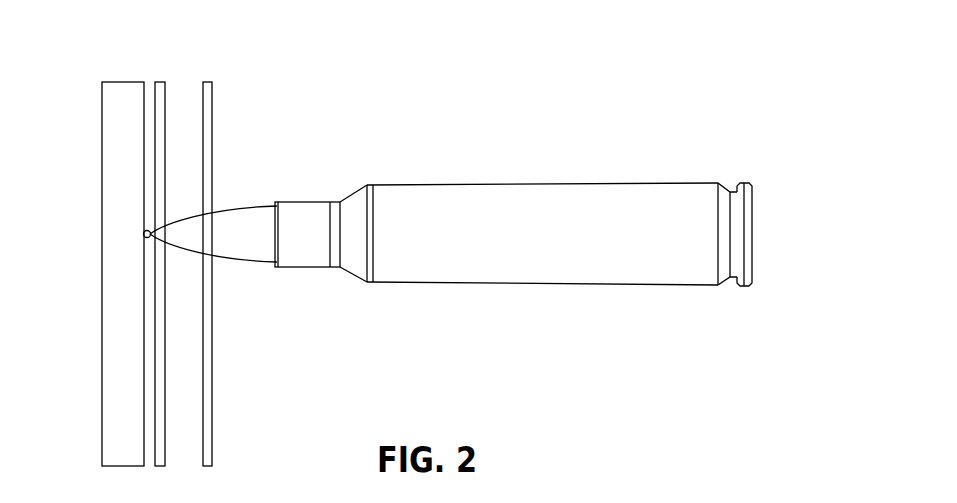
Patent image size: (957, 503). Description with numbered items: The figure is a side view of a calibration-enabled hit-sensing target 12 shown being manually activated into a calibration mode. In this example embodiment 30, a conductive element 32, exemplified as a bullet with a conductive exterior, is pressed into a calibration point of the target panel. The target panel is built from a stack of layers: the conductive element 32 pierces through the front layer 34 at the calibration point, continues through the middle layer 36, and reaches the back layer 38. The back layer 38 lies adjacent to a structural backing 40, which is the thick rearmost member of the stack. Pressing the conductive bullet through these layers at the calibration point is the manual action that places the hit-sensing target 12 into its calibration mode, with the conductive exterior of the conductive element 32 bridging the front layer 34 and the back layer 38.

The hit-sensing calibration-enabled target 12 is at (213, 64).
The example embodiment 30 is at (738, 114).
The conductive element 32 is at (232, 223).
The front layer 34 is at (210, 313).
The middle layer 36 is at (185, 375).
The back layer 38 is at (155, 172).
The structural backing 40 is at (115, 328).